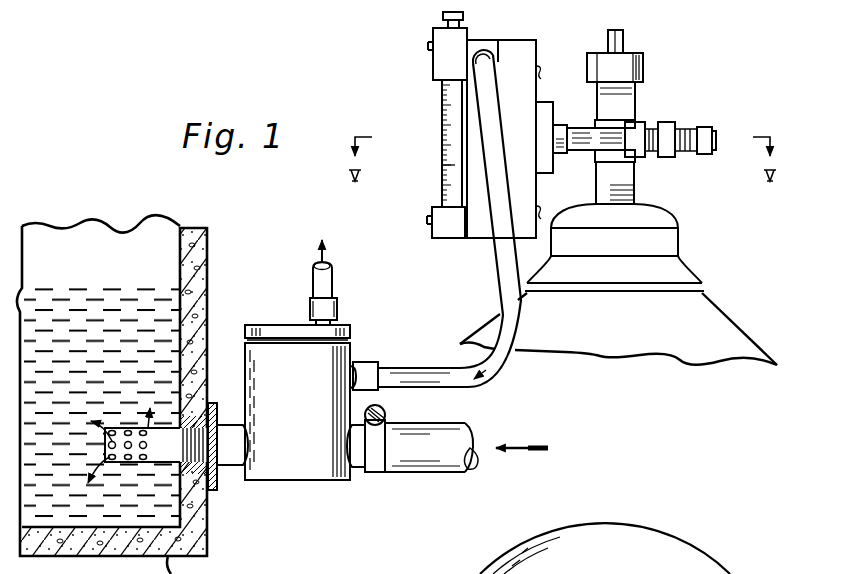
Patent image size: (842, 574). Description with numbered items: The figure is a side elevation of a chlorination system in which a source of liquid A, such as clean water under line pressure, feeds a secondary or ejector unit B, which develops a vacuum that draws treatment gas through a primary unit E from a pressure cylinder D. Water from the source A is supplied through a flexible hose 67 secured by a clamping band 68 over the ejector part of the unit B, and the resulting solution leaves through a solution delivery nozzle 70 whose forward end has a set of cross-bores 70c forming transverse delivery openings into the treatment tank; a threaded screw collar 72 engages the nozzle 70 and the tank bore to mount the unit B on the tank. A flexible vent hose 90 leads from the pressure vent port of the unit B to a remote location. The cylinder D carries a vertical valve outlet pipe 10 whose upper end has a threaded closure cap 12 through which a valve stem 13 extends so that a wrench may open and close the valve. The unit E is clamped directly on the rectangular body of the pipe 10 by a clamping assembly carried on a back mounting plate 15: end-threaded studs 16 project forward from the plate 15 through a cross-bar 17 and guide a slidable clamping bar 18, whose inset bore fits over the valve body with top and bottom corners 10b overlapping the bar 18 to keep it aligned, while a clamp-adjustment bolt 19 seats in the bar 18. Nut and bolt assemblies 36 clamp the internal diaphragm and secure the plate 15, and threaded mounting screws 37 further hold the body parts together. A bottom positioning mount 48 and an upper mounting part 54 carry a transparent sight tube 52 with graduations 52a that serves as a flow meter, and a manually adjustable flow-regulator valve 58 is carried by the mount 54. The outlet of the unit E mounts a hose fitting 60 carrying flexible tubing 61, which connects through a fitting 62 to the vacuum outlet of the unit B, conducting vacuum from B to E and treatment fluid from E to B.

The valve outlet pipe 10 is at (639, 187).
The top and bottom corners 10b is at (638, 162).
The threaded closure cap 12 is at (643, 68).
The valve stem 13 is at (626, 44).
The back mounting plate 15 is at (542, 103).
The end-threaded studs 16 is at (590, 151).
The cross-bar member 17 is at (668, 123).
The slidable clamping bar 18 is at (639, 122).
The clamp-adjustment bolt 19 is at (706, 128).
The nut and bolt assemblies 36 is at (558, 125).
The threaded mounting screws 37 is at (540, 74).
The bottom positioning mount 48 is at (431, 215).
The sight tube 52 is at (442, 95).
The graduations 52a is at (442, 165).
The upper mounting part 54 is at (433, 61).
The flow-regulator valve 58 is at (446, 24).
The hose fitting 60 is at (471, 53).
The flexible tubing 61 is at (497, 262).
The fitting 62 is at (368, 363).
The flexible hose 67 is at (439, 472).
The clamping band 68 is at (386, 418).
The solution delivery nozzle 70 is at (165, 466).
The cross-bores 70c is at (129, 430).
The screw collar 72 is at (215, 405).
The vent hose 90 is at (334, 277).
The source of liquid A is at (522, 433).
The secondary ejector unit B is at (297, 402).
The pressure cylinder D is at (748, 338).
The primary unit E is at (530, 39).